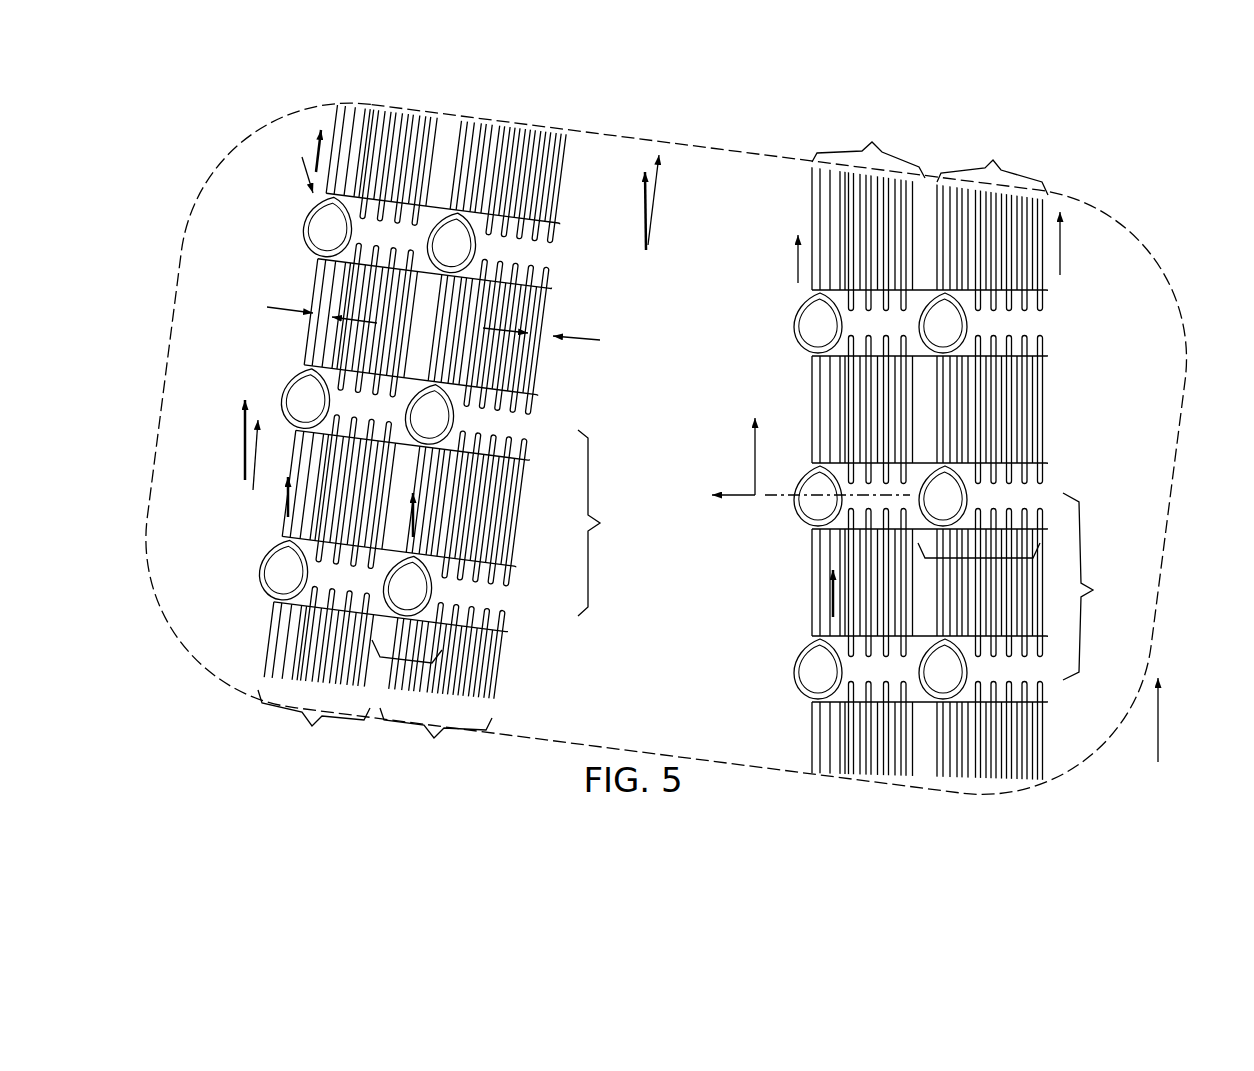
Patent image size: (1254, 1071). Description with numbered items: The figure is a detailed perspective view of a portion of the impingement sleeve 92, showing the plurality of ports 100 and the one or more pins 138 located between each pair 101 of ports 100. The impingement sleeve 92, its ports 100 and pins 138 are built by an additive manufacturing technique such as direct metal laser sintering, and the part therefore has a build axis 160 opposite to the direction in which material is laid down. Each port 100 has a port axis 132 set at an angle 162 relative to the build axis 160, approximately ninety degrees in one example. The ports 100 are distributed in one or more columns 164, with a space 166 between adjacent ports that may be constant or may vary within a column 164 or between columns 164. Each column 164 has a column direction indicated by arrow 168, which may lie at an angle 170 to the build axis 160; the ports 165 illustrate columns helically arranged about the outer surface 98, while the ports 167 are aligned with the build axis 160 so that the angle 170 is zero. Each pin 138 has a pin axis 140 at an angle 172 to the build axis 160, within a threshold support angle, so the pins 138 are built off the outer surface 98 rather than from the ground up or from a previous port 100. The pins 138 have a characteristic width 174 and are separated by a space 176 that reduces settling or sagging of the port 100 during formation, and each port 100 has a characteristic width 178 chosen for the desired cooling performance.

The impingement sleeve 92 is at (706, 126).
The outer surface 98 is at (741, 254).
The ports 100 is at (310, 224).
The pair of ports 101 is at (550, 430).
The port axis 132 is at (714, 498).
The pins 138 is at (500, 153).
The pin axis 140 is at (410, 523).
The build axis 160 is at (612, 273).
The angle 162 is at (745, 482).
The columns 164 is at (653, 443).
The ports 165 is at (400, 607).
The space 166 is at (566, 670).
The ports 167 is at (822, 332).
The column direction 168 is at (316, 172).
The angle 170 is at (662, 185).
The angle 172 is at (250, 443).
The characteristic width 174 is at (565, 340).
The space 176 is at (287, 306).
The characteristic width 178 is at (302, 175).